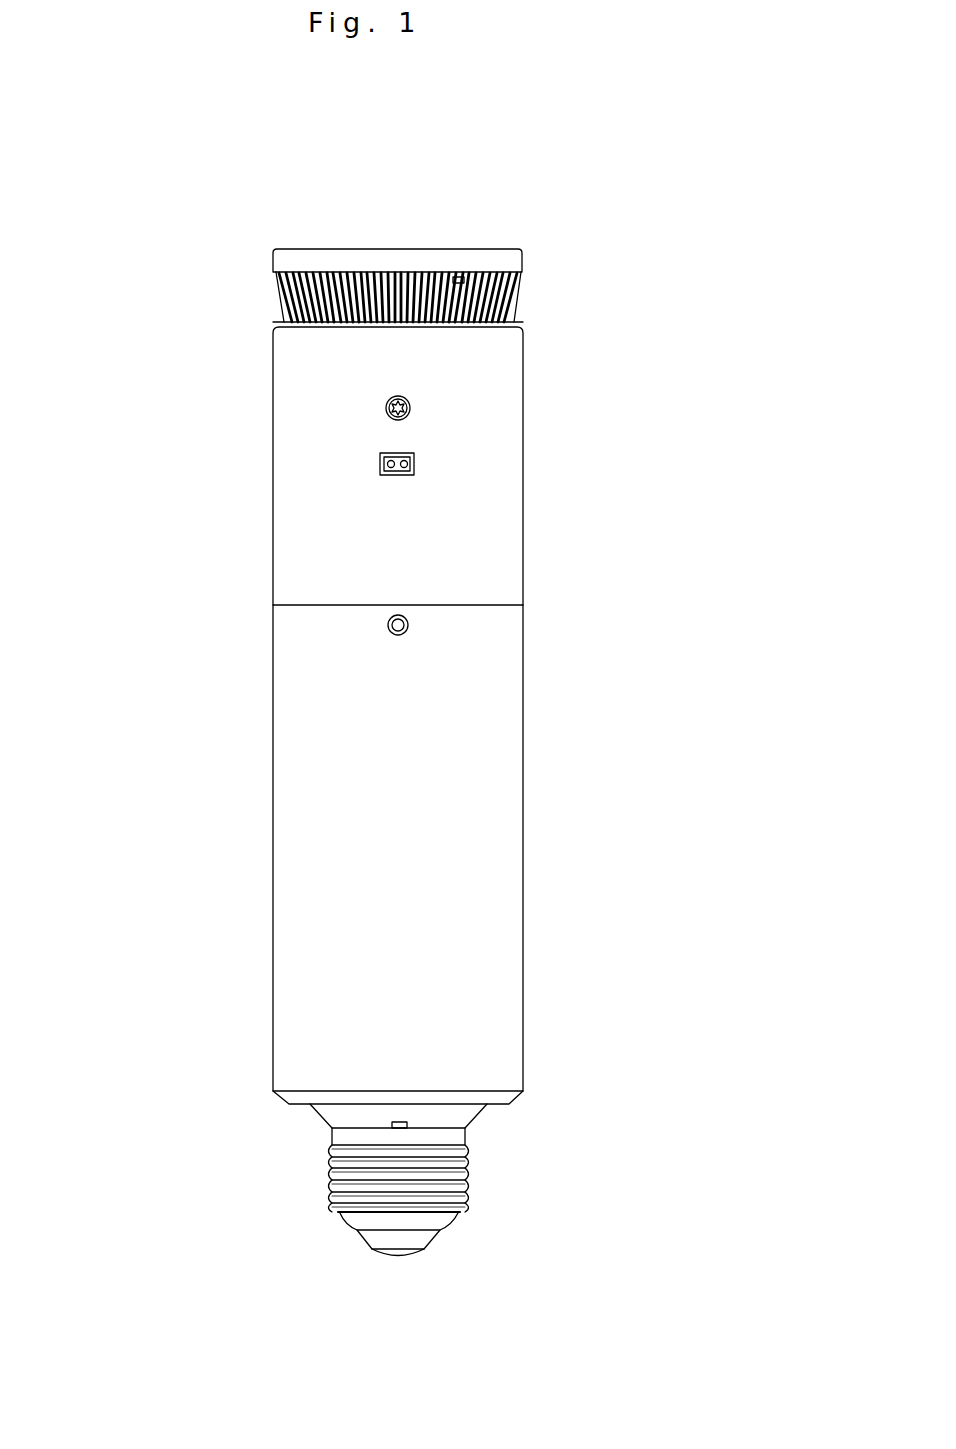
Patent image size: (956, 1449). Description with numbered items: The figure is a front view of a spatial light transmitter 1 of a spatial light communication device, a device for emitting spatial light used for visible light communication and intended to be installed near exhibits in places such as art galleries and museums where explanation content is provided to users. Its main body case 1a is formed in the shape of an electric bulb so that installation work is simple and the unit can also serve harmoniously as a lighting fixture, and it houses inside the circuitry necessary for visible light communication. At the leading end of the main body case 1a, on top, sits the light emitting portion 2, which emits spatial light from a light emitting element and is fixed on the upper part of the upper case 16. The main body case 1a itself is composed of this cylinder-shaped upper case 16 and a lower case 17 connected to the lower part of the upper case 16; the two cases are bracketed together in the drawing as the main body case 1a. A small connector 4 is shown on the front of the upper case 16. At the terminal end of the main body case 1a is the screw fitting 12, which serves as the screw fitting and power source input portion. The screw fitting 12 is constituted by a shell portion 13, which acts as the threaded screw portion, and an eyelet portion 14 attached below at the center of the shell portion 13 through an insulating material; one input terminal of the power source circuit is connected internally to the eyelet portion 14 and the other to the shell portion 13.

The spatial light transmitter 1 is at (552, 551).
The main body case 1a is at (138, 500).
The light emitting portion 2 is at (528, 271).
The connector terminal 4 is at (380, 466).
The screw fitting 12 is at (469, 1178).
The shell portion 13 is at (332, 1182).
The eyelet portion 14 is at (400, 1256).
The upper case 16 is at (283, 530).
The lower case 17 is at (293, 679).